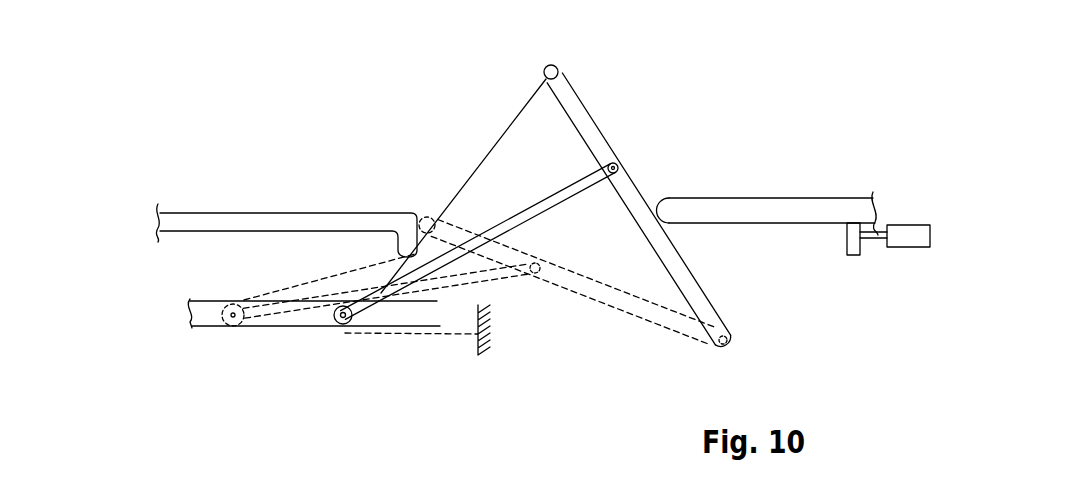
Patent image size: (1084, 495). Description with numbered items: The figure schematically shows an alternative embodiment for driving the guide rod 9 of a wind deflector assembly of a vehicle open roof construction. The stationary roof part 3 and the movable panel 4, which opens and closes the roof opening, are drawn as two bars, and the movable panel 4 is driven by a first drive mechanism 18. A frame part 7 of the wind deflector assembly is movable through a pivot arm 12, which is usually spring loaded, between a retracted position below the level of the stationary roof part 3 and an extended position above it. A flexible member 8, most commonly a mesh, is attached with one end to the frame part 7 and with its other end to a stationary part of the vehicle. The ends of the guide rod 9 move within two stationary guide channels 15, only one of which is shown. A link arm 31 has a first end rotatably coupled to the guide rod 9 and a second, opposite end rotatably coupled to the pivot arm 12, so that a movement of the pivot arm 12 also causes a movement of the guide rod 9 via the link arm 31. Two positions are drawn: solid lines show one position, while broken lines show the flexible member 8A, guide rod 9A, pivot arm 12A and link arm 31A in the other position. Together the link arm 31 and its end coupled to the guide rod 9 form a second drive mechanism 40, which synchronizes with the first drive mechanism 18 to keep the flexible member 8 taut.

The stationary roof part 3 is at (258, 212).
The movable panel 4 is at (775, 197).
The frame part 7 is at (558, 68).
The flexible member 8 is at (481, 152).
The flexible member (broken-line position) 8A is at (325, 279).
The guide rod 9 is at (343, 326).
The guide rod (broken-line position) 9A is at (240, 326).
The pivot arm 12 is at (633, 186).
The pivot arm (broken-line position) 12A is at (647, 322).
The stationary guide channel 15 is at (190, 300).
The first drive mechanism 18 is at (915, 223).
The link arm 31 is at (538, 198).
The link arm (broken-line position) 31A is at (484, 282).
The second drive mechanism 40 is at (140, 327).